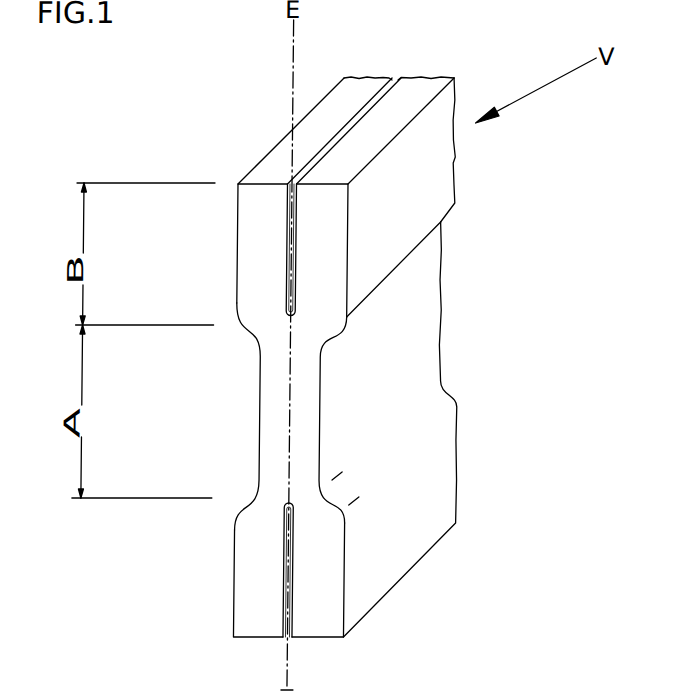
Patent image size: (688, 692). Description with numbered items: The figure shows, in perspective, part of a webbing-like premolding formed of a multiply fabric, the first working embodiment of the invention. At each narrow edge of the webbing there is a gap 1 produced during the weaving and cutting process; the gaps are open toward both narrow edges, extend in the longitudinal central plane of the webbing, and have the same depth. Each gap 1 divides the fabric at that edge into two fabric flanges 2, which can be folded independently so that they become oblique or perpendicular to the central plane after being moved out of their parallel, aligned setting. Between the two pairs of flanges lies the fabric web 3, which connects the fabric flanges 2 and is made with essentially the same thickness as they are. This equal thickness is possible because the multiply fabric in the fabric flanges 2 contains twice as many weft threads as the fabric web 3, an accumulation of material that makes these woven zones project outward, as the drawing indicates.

The gap 1 is at (288, 233).
The fabric flange 2 is at (272, 270).
The fabric web 3 is at (278, 410).